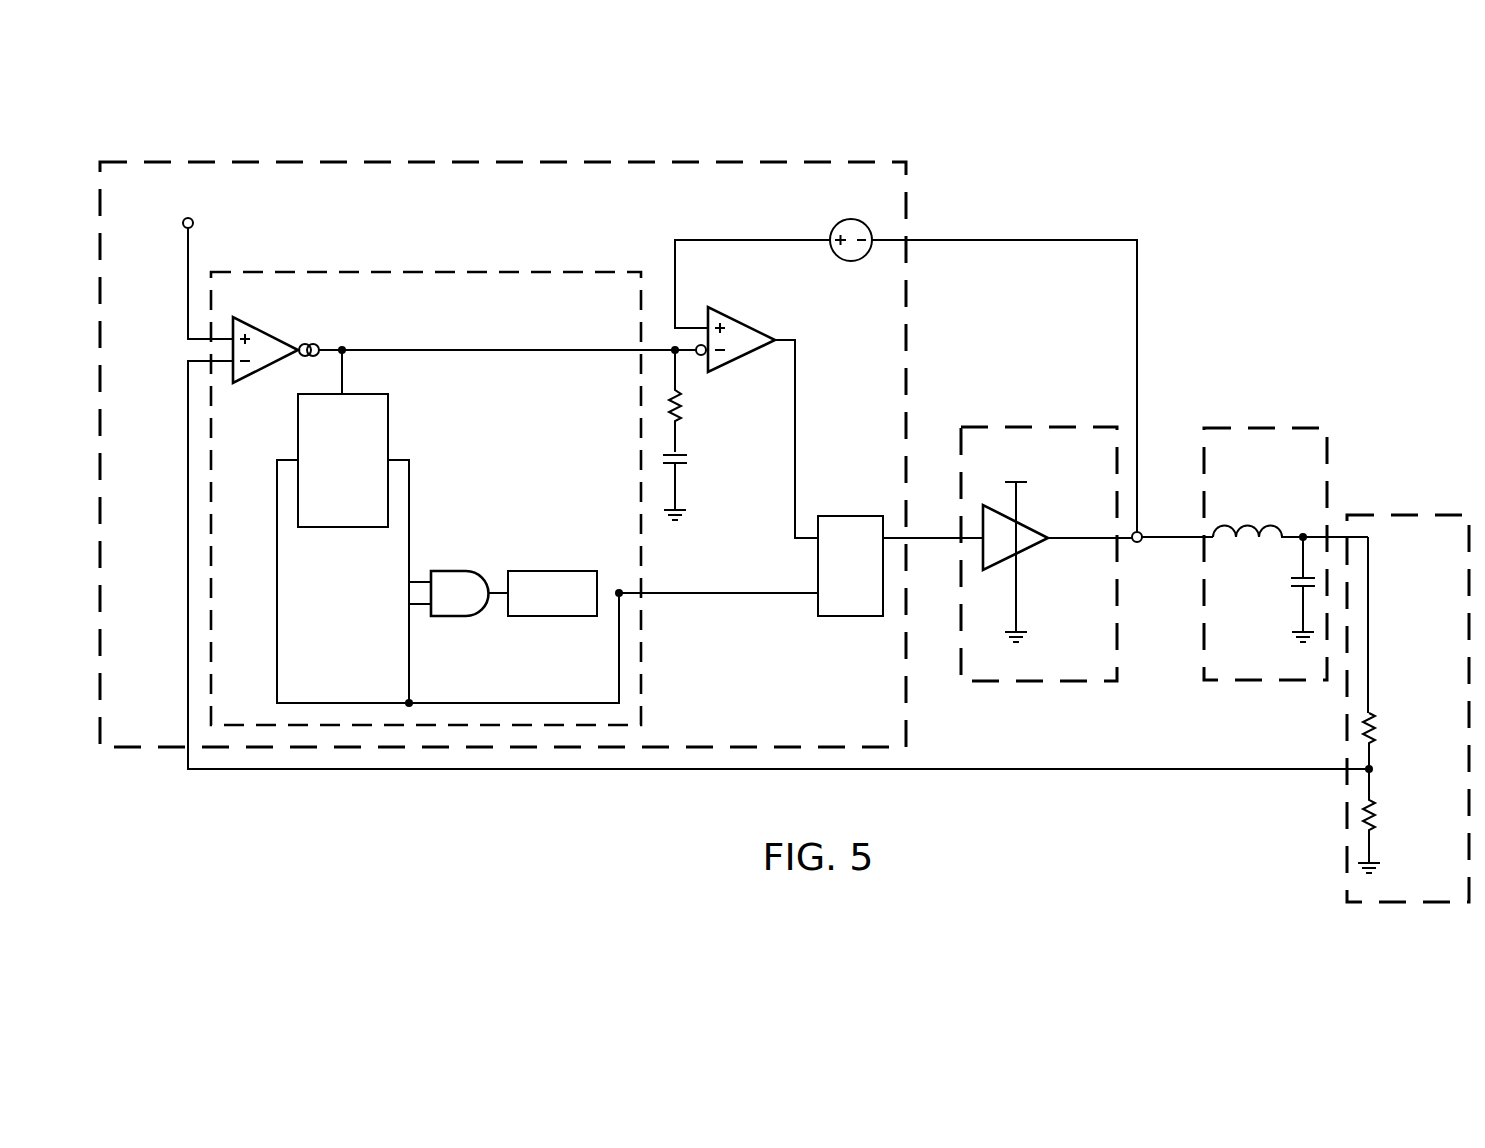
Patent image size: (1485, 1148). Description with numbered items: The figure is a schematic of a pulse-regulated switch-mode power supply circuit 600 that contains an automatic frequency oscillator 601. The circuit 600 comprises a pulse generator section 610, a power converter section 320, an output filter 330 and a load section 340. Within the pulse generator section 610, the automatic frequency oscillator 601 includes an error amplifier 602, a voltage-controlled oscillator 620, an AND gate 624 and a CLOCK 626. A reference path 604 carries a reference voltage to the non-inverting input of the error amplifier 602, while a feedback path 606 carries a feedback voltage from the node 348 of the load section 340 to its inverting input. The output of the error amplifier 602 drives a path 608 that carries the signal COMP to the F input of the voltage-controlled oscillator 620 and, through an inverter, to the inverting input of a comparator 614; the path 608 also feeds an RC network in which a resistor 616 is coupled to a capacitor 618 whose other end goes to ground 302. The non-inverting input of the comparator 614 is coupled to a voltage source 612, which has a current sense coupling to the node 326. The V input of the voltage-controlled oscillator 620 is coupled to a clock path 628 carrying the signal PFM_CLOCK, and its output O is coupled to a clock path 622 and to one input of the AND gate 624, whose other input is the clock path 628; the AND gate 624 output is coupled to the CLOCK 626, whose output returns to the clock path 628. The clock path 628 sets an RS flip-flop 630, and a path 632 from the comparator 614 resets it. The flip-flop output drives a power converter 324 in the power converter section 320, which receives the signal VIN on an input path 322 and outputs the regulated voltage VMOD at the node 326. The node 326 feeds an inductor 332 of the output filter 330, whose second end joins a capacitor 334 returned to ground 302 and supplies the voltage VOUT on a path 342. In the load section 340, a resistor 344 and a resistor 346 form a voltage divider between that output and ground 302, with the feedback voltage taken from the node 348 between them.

The pulse-regulated switch-mode power supply circuit 600 is at (1322, 210).
The pulse generator section 610 is at (420, 152).
The automatic frequency oscillator 601 is at (338, 263).
The error amplifier 602 is at (270, 331).
The reference path 604 is at (186, 283).
The feedback path 606 is at (186, 571).
The path 608 is at (492, 354).
The voltage source 612 is at (853, 262).
The comparator 614 is at (740, 322).
The resistor 616 is at (686, 412).
The capacitor 618 is at (686, 461).
The voltage-controlled oscillator 620 is at (330, 529).
The clock path 622 is at (412, 522).
The AND gate 624 is at (452, 618).
The CLOCK 626 is at (552, 618).
The clock path 628 is at (722, 597).
The RS flip-flop 630 is at (850, 618).
The path 632 is at (797, 440).
The ground 302 is at (688, 514).
The power converter section 320 is at (1042, 416).
The input path 322 is at (1020, 501).
The power converter 324 is at (1032, 555).
The node 326 is at (1142, 546).
The output filter 330 is at (1268, 416).
The inductor 332 is at (1255, 520).
The capacitor 334 is at (1291, 581).
The load section 340 is at (1411, 505).
The path 342 is at (1372, 652).
The resistor 344 is at (1376, 730).
The resistor 346 is at (1376, 816).
The node 348 is at (1376, 773).